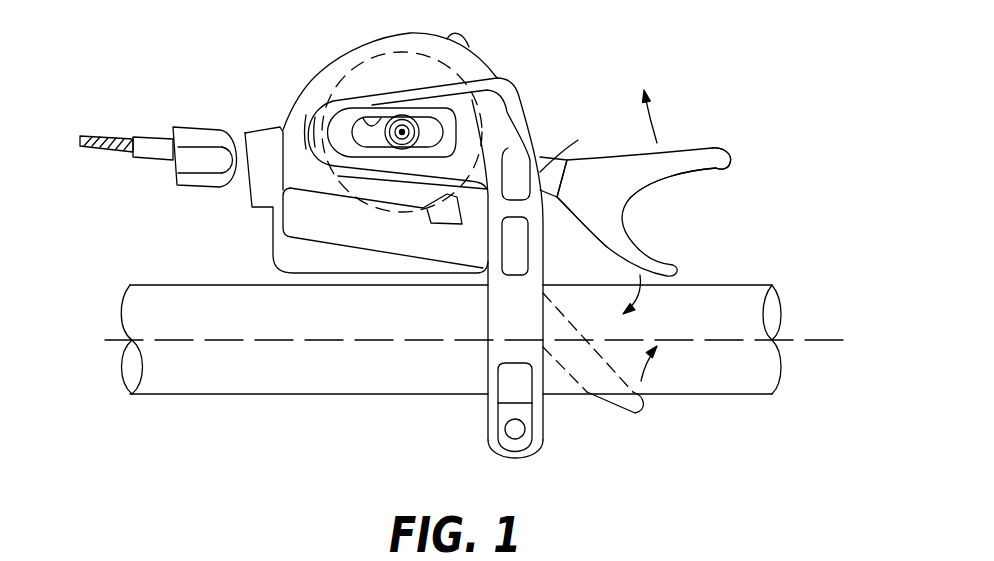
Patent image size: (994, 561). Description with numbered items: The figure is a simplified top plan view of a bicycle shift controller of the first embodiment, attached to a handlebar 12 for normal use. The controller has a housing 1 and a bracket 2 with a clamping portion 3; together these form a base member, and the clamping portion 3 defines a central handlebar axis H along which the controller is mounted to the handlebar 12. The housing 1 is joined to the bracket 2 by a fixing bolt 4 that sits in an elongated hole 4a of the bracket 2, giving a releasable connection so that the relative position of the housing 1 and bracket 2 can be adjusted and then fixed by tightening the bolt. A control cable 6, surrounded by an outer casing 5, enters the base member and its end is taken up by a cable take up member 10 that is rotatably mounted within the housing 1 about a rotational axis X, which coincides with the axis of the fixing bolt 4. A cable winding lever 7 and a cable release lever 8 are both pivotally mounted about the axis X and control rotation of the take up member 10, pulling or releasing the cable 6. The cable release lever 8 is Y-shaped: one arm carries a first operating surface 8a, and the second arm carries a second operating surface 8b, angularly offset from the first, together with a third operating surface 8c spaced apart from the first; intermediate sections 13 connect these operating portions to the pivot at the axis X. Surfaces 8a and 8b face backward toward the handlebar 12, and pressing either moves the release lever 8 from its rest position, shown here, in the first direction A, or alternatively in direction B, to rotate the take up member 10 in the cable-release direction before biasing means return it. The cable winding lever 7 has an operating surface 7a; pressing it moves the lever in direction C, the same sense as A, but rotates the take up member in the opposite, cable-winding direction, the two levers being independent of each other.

The housing 1 is at (318, 76).
The bracket 2 is at (522, 130).
The clamping portion 3 is at (500, 352).
The fixing bolt 4 is at (401, 128).
The elongated hole 4a is at (370, 127).
The rotational axis X is at (406, 120).
The outer casing 5 is at (146, 164).
The control cable 6 is at (104, 137).
The cable winding lever 7 is at (634, 412).
The operating surface 7a is at (572, 376).
The cable release lever 8 is at (688, 208).
The first operating surface 8a is at (623, 260).
The second operating surface 8b is at (740, 184).
The third operating surface 8c is at (740, 184).
The cable take up member 10 is at (470, 60).
The handlebar 12 is at (745, 365).
The intermediate sections 13 is at (577, 183).
The first direction A is at (660, 123).
The direction B is at (635, 297).
The direction C is at (645, 377).
The central handlebar axis H is at (490, 341).